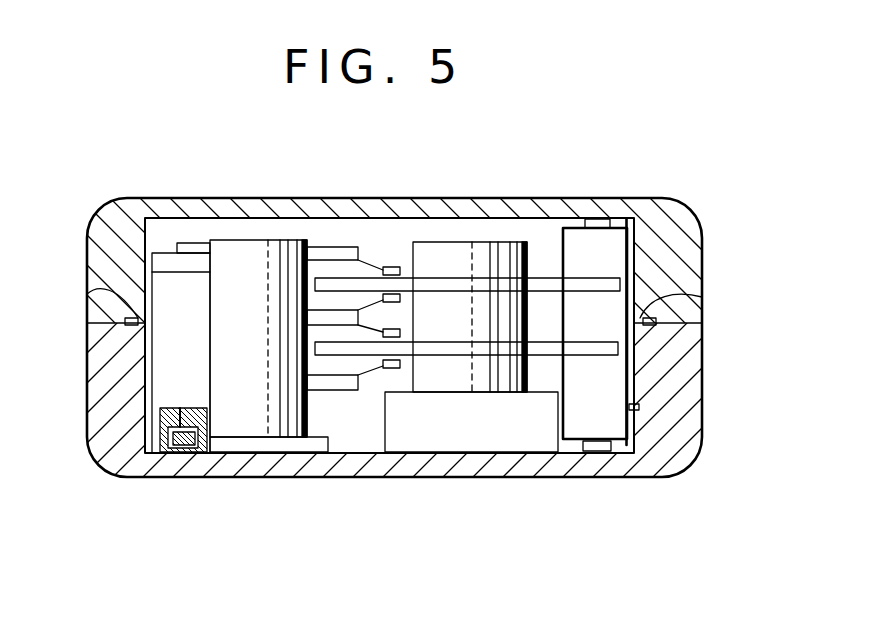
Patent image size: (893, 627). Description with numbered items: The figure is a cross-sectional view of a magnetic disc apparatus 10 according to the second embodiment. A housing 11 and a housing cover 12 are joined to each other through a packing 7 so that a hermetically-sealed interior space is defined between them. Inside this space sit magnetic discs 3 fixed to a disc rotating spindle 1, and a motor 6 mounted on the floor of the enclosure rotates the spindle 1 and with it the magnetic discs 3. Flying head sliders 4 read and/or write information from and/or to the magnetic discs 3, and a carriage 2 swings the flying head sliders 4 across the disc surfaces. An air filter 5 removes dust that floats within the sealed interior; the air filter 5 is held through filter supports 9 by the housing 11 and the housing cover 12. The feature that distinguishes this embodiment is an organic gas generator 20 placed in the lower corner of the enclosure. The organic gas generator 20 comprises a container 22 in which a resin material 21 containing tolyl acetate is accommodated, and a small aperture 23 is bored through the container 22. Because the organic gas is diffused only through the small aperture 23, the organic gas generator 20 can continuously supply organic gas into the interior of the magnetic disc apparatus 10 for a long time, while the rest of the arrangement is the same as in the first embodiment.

The disc rotating spindle 1 is at (473, 242).
The carriage 2 is at (268, 240).
The magnetic discs 3 is at (537, 277).
The flying head sliders 4 is at (390, 266).
The air filter 5 is at (646, 407).
The motor 6 is at (465, 443).
The packing 7 is at (87, 294).
The filter supports 9 is at (579, 221).
The magnetic disc apparatus 10 is at (368, 190).
The housing 11 is at (708, 368).
The housing cover 12 is at (708, 250).
The organic gas generator 20 is at (181, 464).
The resin material 21 is at (160, 413).
The container 22 is at (168, 436).
The small aperture 23 is at (181, 408).